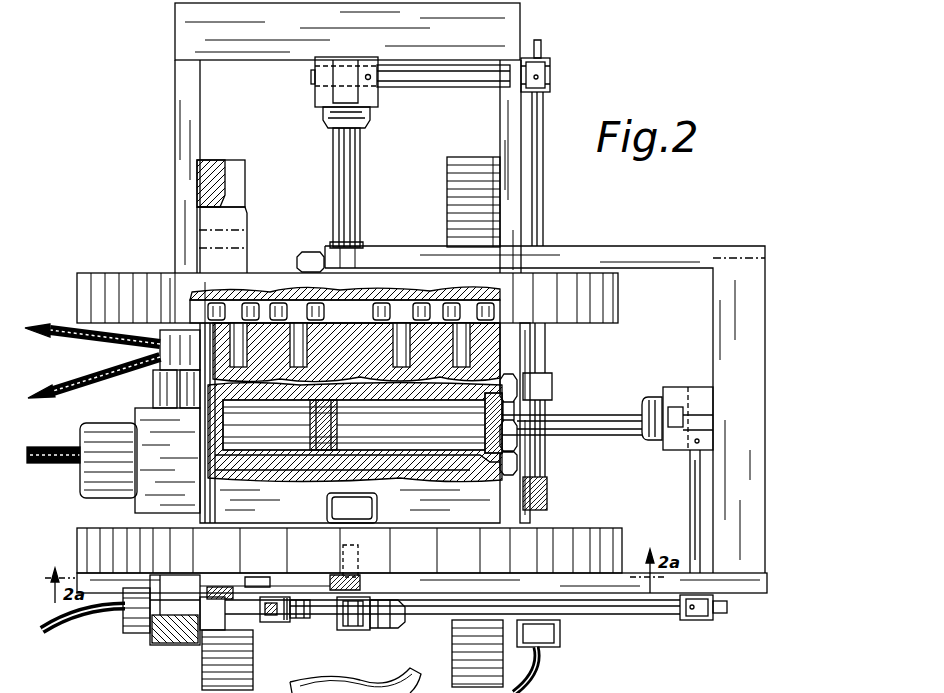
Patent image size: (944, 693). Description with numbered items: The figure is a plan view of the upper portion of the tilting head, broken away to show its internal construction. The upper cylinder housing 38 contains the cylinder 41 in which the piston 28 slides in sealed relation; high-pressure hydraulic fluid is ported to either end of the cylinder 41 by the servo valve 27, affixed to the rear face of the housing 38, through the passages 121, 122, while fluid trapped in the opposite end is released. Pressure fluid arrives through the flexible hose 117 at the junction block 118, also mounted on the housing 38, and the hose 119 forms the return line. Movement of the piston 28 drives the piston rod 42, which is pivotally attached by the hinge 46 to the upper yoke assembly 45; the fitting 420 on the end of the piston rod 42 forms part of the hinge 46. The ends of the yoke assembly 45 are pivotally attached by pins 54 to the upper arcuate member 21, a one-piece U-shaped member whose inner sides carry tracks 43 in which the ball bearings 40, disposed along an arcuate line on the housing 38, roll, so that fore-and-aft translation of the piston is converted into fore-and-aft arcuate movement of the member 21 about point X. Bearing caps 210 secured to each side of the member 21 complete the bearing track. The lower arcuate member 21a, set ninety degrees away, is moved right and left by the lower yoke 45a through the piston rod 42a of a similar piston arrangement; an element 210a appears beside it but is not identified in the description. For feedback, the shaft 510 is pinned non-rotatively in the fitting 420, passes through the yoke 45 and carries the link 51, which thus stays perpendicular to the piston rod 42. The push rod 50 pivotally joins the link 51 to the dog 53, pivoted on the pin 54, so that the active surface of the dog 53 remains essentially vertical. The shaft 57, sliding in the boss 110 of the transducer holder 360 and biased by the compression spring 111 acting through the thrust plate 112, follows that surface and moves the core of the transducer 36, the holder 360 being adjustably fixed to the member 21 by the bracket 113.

The upper arcuate member 21 is at (400, 282).
The lower arcuate member 21a is at (240, 172).
The servo valve 27 is at (80, 492).
The piston 28 is at (313, 453).
The transducer 36 is at (123, 633).
The upper cylinder housing 38 is at (490, 368).
The ball bearings 40 is at (283, 315).
The cylinder 41 is at (355, 425).
The piston rod 42 is at (580, 420).
The piston rod 42a is at (360, 183).
The tracks 43 is at (335, 312).
The upper yoke assembly 45 is at (745, 246).
The lower yoke 45a is at (514, 24).
The hinge 46 is at (713, 417).
The push rod 50 is at (635, 612).
The link 51 is at (718, 598).
The dog 53 is at (370, 617).
The pins 54 is at (358, 569).
The shaft 57 is at (293, 618).
The boss 110 is at (285, 620).
The compression spring 111 is at (288, 598).
The thrust plate 112 is at (317, 600).
The adjustable bracket 113 is at (247, 588).
The hose 117 is at (78, 392).
The junction block 118 is at (158, 368).
The hose 119 is at (80, 333).
The passage 121 is at (200, 488).
The passage 122 is at (427, 467).
The bearing caps 210 is at (583, 528).
The guide block lower portion 210a is at (238, 228).
The transducer holder 360 is at (172, 647).
The fitting 420 is at (662, 396).
The shaft 510 is at (690, 488).